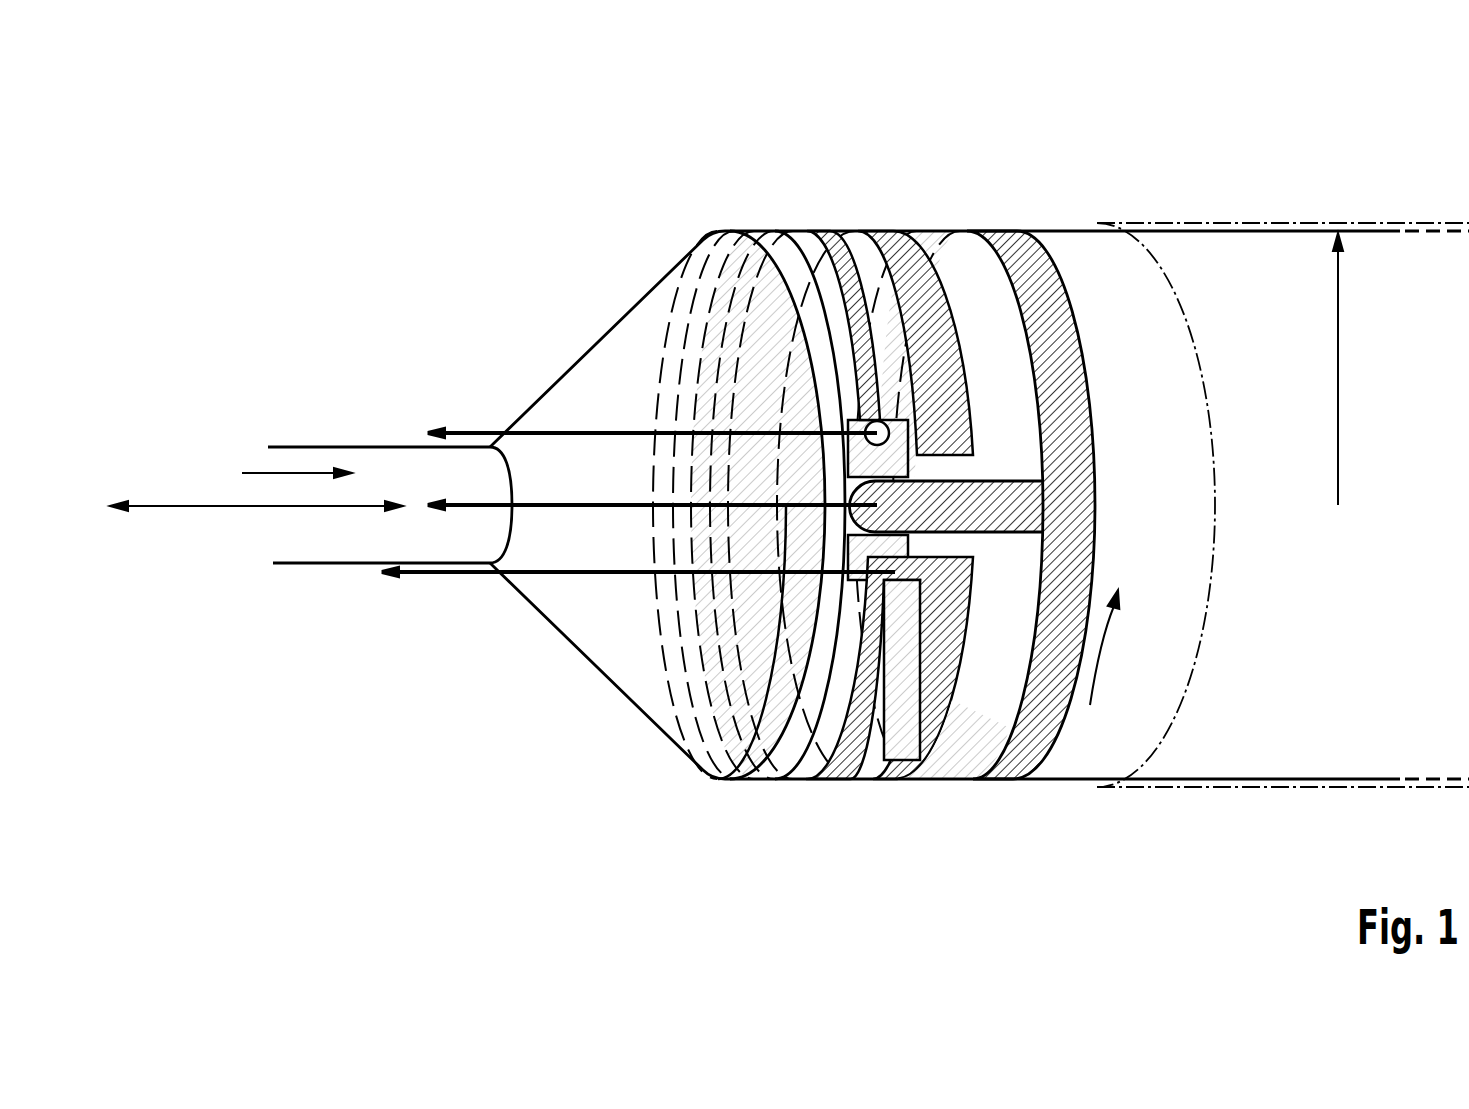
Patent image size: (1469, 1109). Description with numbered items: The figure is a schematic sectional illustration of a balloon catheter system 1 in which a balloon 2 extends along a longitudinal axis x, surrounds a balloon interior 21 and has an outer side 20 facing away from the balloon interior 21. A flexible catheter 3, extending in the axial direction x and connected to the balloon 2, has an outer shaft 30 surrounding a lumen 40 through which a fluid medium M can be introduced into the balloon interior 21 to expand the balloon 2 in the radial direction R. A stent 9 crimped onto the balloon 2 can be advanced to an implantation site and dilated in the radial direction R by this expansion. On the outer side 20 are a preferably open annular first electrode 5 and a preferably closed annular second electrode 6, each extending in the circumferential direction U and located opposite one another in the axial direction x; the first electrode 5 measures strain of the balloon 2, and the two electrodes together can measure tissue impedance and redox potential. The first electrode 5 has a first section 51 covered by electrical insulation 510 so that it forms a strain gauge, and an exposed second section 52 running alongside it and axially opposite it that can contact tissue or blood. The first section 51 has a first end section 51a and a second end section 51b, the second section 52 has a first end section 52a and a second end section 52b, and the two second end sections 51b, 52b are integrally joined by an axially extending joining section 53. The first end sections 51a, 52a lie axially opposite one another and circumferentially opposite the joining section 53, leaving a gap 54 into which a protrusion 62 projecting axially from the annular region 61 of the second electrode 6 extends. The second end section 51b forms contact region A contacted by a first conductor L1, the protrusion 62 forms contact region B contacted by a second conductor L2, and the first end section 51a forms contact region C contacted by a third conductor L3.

The balloon catheter system 1 is at (475, 268).
The balloon 2 is at (1098, 180).
The catheter 3 is at (355, 428).
The first electrode 5 is at (828, 222).
The second electrode 6 is at (1026, 222).
The stent 9 is at (1322, 202).
The outer side 20 is at (1222, 223).
The balloon interior 21 is at (1283, 255).
The outer shaft 30 is at (322, 447).
The lumen 40 is at (400, 460).
The first section 51 is at (880, 690).
The electrical insulation 510 is at (843, 350).
The first end section 51a is at (866, 430).
The second end section 51b is at (857, 553).
The second section 52 is at (888, 250).
The first end section 52a is at (945, 422).
The second end section 52b is at (938, 545).
The joining section 53 is at (857, 640).
The gap 54 is at (907, 578).
The annular region 61 is at (1033, 730).
The protrusion 62 is at (853, 520).
The first conductor L1 is at (402, 574).
The second conductor L2 is at (548, 505).
The third conductor L3 is at (466, 432).
The fluid medium M is at (290, 472).
The longitudinal axis x is at (192, 506).
The radial direction R is at (1338, 365).
The circumferential direction U is at (1105, 650).